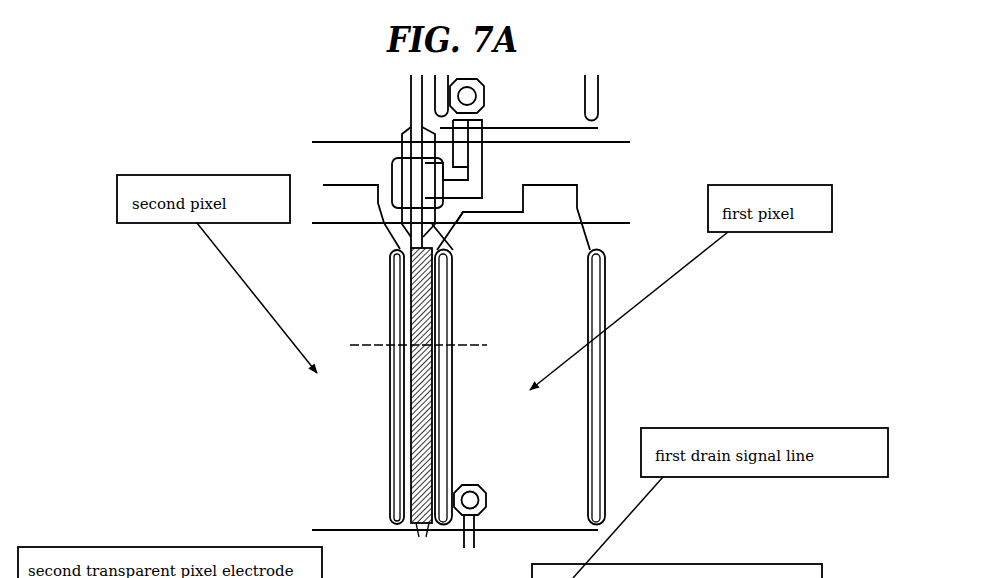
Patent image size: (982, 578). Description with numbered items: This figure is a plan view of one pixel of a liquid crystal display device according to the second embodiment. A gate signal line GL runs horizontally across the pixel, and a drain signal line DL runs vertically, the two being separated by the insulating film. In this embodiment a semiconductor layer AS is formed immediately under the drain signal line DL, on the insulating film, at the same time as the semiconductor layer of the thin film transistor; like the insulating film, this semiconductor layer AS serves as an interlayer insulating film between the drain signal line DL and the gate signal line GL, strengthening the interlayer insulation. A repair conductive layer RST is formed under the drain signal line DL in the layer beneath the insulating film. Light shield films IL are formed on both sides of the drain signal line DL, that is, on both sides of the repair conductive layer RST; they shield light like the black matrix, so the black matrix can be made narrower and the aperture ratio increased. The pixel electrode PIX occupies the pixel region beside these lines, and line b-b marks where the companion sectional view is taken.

The gate signal line GL is at (488, 182).
The drain signal line DL is at (357, 378).
The pixel electrode PIX is at (622, 379).
The repair conductive layer RST is at (412, 477).
The light shield film IL is at (397, 532).
The semiconductor layer AS is at (424, 534).
The line b- b is at (364, 349).